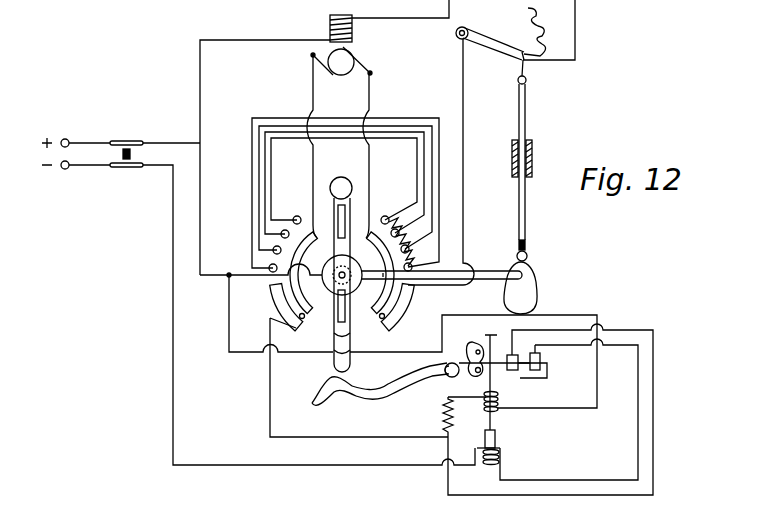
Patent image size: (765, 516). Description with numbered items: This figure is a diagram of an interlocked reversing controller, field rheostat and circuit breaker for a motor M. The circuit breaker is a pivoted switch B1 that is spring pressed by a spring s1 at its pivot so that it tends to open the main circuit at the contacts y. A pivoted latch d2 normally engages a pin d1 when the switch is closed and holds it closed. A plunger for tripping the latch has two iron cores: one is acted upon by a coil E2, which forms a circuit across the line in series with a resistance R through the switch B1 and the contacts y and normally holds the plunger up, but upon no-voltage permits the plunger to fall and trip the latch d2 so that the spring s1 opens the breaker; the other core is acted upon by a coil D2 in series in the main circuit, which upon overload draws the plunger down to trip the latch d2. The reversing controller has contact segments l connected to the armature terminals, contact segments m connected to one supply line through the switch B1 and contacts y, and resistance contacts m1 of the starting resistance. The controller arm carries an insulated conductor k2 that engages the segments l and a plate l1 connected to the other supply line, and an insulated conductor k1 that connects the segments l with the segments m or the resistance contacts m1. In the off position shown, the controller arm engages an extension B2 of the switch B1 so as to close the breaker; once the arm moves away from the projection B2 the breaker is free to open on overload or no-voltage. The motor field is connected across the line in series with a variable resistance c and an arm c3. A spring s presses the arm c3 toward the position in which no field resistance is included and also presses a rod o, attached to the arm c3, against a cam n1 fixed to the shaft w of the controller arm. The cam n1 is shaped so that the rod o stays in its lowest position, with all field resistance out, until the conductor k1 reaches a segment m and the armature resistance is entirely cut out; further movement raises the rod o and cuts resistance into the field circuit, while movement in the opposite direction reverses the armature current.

The motor M is at (343, 45).
The spring s is at (456, 36).
The field rheostat arm c3 is at (496, 46).
The variable resistance c is at (538, 42).
The rod o is at (528, 114).
The insulated conductor k1 is at (344, 214).
The insulated conductor k2 is at (340, 303).
The contact segments l is at (342, 260).
The plate l1 is at (333, 268).
The contact segments m is at (278, 302).
The resistance contacts m1 is at (256, 250).
The shaft w is at (490, 264).
The cam n1 is at (530, 294).
The extension of switch B2 is at (322, 388).
The pivoted switch B1 is at (398, 388).
The spring s1 is at (443, 363).
The pivoted latch d2 is at (471, 377).
The pin d1 is at (482, 371).
The contacts y is at (523, 352).
The resistance R is at (454, 417).
The coil E2 is at (500, 408).
The coil D2 is at (503, 452).